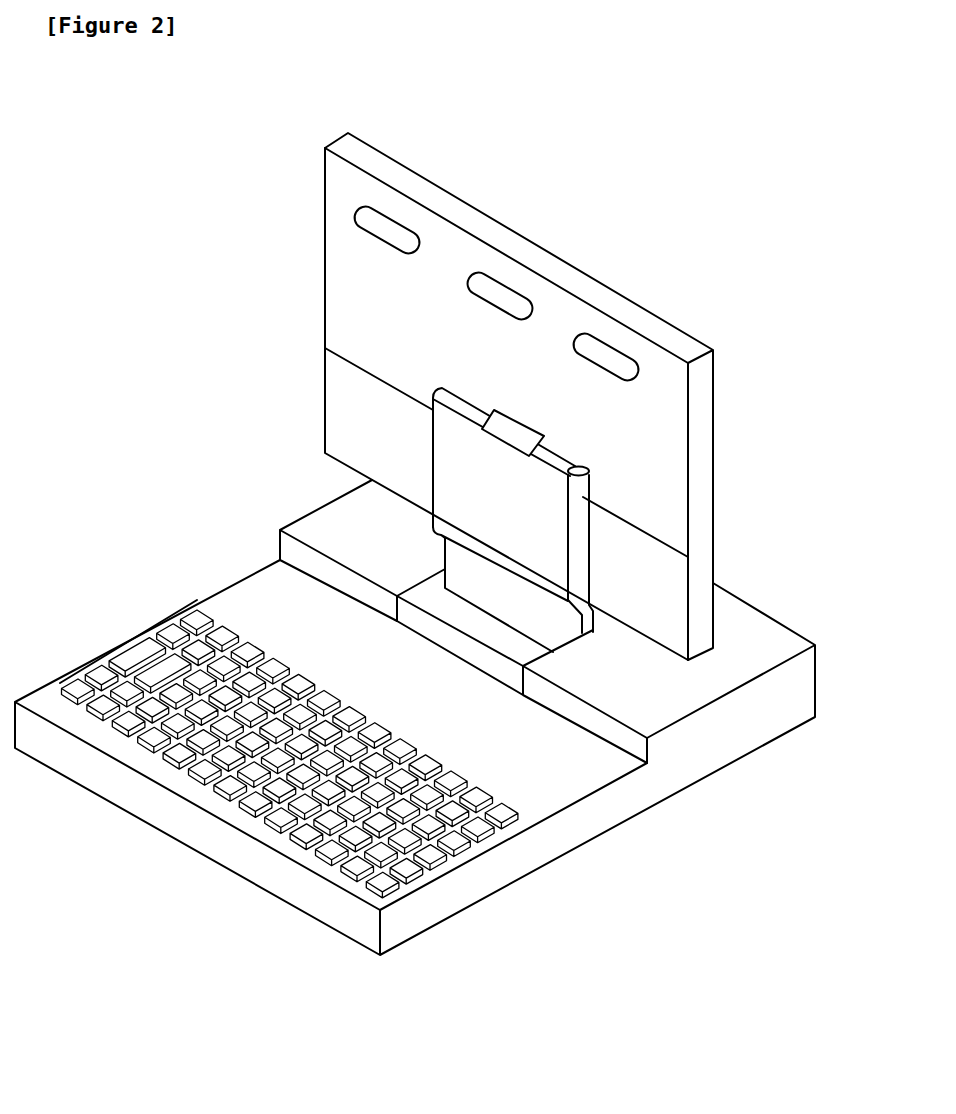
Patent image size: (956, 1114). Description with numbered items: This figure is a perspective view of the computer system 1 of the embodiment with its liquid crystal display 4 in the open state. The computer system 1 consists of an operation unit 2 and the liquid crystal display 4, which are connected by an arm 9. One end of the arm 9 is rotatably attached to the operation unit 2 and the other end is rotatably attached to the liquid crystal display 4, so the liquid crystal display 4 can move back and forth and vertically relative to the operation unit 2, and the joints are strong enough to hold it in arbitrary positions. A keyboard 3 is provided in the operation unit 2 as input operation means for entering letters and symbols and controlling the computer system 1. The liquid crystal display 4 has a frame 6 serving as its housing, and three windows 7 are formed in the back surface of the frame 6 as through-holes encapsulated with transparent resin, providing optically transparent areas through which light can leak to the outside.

The computer system 1 is at (242, 349).
The operation unit 2 is at (133, 594).
The keyboard 3 is at (117, 647).
The liquid crystal display 4 is at (317, 253).
The frame 6 is at (323, 333).
The windows 7 is at (388, 227).
The arm 9 is at (455, 503).